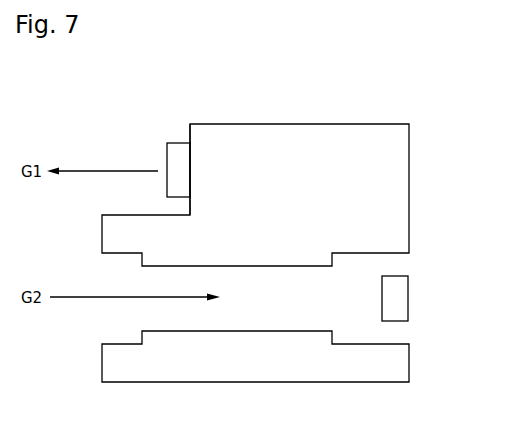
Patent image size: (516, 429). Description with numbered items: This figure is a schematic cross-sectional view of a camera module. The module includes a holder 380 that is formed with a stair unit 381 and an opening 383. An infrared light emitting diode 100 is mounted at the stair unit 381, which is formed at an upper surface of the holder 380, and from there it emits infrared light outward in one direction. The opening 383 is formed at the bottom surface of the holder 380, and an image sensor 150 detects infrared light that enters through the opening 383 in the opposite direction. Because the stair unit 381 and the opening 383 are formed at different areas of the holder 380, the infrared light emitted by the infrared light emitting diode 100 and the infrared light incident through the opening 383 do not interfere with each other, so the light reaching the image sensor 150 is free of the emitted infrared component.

The holder 380 is at (345, 140).
The stair unit 381 is at (190, 132).
The opening 383 is at (257, 310).
The infrared light emitting diode 100 is at (170, 153).
The image sensor 150 is at (402, 298).